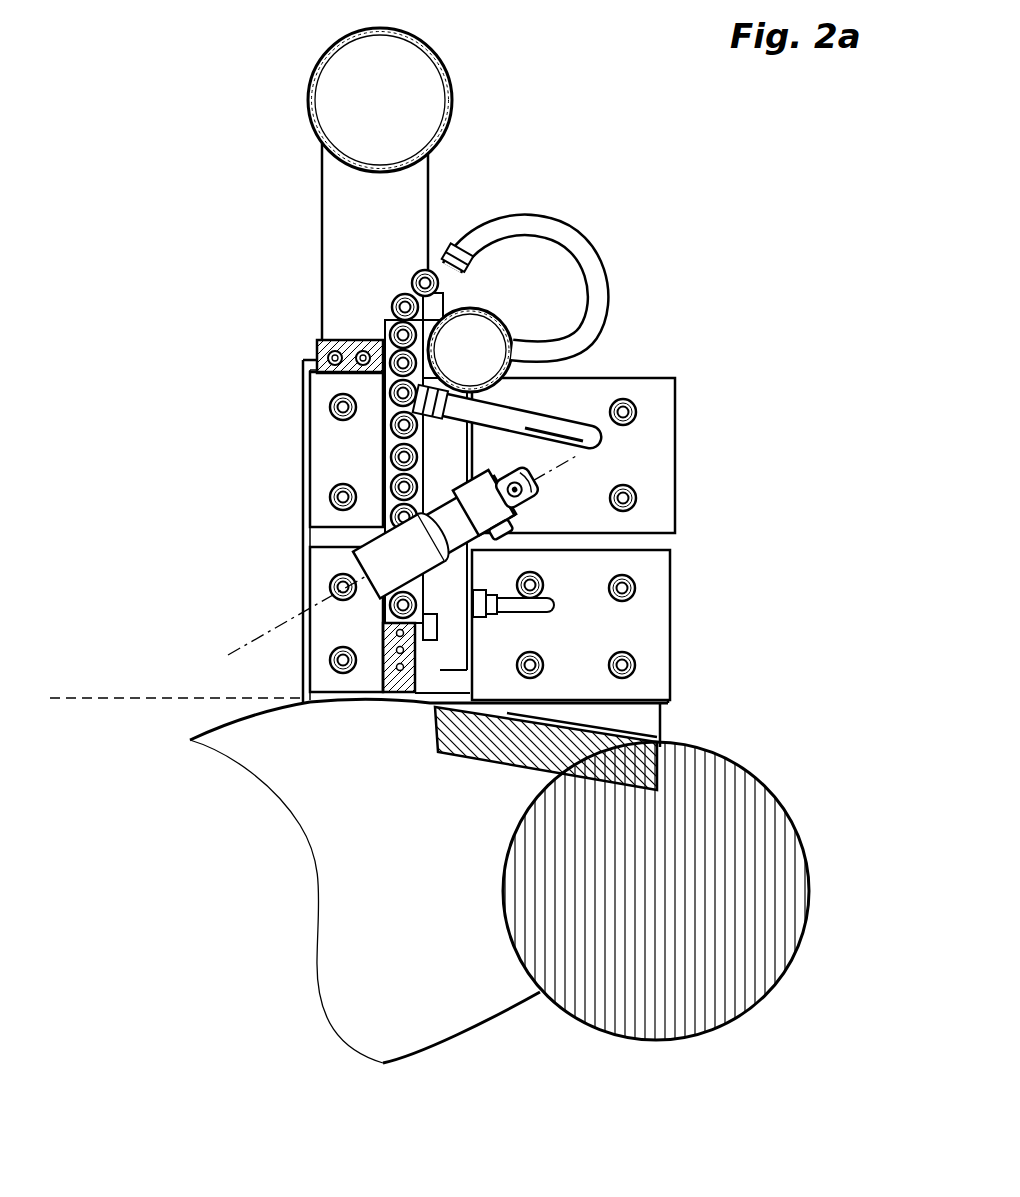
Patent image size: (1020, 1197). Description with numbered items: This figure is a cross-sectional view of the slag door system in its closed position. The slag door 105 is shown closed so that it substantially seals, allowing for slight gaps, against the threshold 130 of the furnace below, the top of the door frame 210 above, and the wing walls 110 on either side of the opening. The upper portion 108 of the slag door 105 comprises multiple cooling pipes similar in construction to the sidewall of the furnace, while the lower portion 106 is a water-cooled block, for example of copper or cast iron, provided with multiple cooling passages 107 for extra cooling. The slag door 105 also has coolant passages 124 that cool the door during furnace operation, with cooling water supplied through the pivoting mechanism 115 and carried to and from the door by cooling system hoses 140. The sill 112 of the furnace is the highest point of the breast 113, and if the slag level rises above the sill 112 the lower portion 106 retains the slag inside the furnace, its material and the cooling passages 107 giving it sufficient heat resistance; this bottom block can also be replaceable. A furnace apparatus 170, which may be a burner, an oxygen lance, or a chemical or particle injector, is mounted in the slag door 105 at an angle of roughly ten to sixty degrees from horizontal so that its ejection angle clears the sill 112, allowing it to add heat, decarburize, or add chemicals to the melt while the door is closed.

The slag door 105 is at (376, 270).
The door frame 210 is at (317, 340).
The upper portion 108 is at (387, 428).
The coolant passages 124 is at (372, 526).
The lower portion 106 is at (383, 686).
The sill 112 is at (177, 685).
The breast 113 is at (356, 722).
The cooling passages 107 is at (397, 703).
The threshold 130 is at (737, 762).
The wing walls 110 is at (677, 478).
The furnace apparatus 170 is at (538, 493).
The cooling system hoses 140 is at (605, 440).
The pivoting mechanism 115 is at (505, 318).